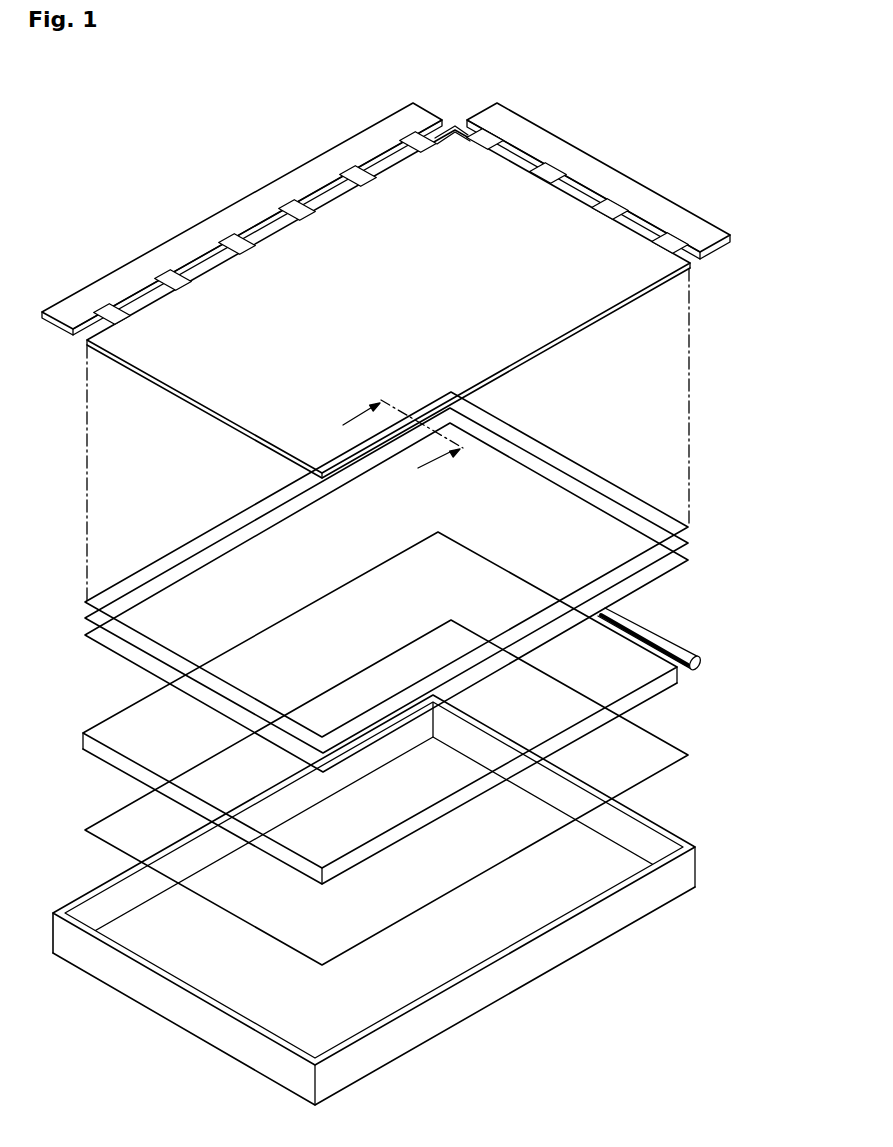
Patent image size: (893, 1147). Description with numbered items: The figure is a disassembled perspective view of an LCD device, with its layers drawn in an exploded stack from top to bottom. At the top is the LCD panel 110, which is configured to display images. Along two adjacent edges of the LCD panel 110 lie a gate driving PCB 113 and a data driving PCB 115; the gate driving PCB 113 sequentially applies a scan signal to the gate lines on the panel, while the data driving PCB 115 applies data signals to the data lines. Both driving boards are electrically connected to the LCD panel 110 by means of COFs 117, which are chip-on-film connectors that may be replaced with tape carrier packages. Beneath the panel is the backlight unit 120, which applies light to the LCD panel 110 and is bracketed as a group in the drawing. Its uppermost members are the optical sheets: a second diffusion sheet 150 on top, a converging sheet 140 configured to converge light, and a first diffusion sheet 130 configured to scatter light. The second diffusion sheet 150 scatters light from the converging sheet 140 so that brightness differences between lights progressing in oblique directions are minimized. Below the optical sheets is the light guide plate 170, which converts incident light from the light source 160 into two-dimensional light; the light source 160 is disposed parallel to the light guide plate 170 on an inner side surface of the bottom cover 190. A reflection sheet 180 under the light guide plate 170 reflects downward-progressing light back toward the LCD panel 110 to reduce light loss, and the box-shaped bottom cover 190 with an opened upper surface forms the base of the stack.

The LCD panel 110 is at (633, 243).
The gate driving PCB 113 is at (540, 142).
The data driving PCB 115 is at (323, 160).
The COF 117 is at (475, 127).
The backlight unit 120 is at (440, 748).
The first diffusion sheet 130 is at (689, 560).
The converging sheet 140 is at (688, 543).
The second diffusion sheet 150 is at (689, 527).
The light source 160 is at (688, 653).
The light guide plate 170 is at (657, 689).
The reflection sheet 180 is at (689, 755).
The bottom cover 190 is at (411, 900).